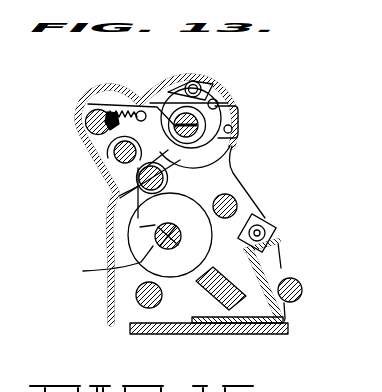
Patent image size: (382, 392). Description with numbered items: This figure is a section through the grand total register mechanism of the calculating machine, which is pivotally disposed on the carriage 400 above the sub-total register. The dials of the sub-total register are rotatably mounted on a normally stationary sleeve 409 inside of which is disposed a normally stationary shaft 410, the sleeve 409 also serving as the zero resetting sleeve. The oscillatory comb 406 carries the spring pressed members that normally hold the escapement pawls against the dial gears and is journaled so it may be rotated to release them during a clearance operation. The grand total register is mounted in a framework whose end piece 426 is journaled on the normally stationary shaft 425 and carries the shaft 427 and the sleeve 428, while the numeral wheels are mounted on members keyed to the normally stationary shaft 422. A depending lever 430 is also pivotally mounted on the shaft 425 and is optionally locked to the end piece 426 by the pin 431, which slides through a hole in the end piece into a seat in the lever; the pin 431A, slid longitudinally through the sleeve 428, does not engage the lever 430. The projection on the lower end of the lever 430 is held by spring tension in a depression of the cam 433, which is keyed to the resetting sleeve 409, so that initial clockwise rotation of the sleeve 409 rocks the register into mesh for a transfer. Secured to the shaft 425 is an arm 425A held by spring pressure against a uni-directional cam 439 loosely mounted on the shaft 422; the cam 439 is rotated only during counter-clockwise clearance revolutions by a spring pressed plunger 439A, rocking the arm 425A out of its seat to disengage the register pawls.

The carriage 400 is at (130, 328).
The oscillatory comb 406 is at (224, 323).
The normally stationary sleeve 409 is at (136, 292).
The normally stationary shaft 410 is at (140, 227).
The normally stationary shaft 422 is at (238, 106).
The normally stationary shaft 425 is at (114, 155).
The arm 425A is at (116, 131).
The end piece 426 is at (239, 127).
The shaft 427 is at (86, 122).
The sleeve 428 is at (138, 180).
The depending lever 430 is at (108, 220).
The pin 431 is at (140, 110).
The pin 431A is at (139, 184).
The cam 433 is at (118, 251).
The uni-directional cam 439 is at (172, 84).
The spring pressed plunger 439A is at (215, 98).